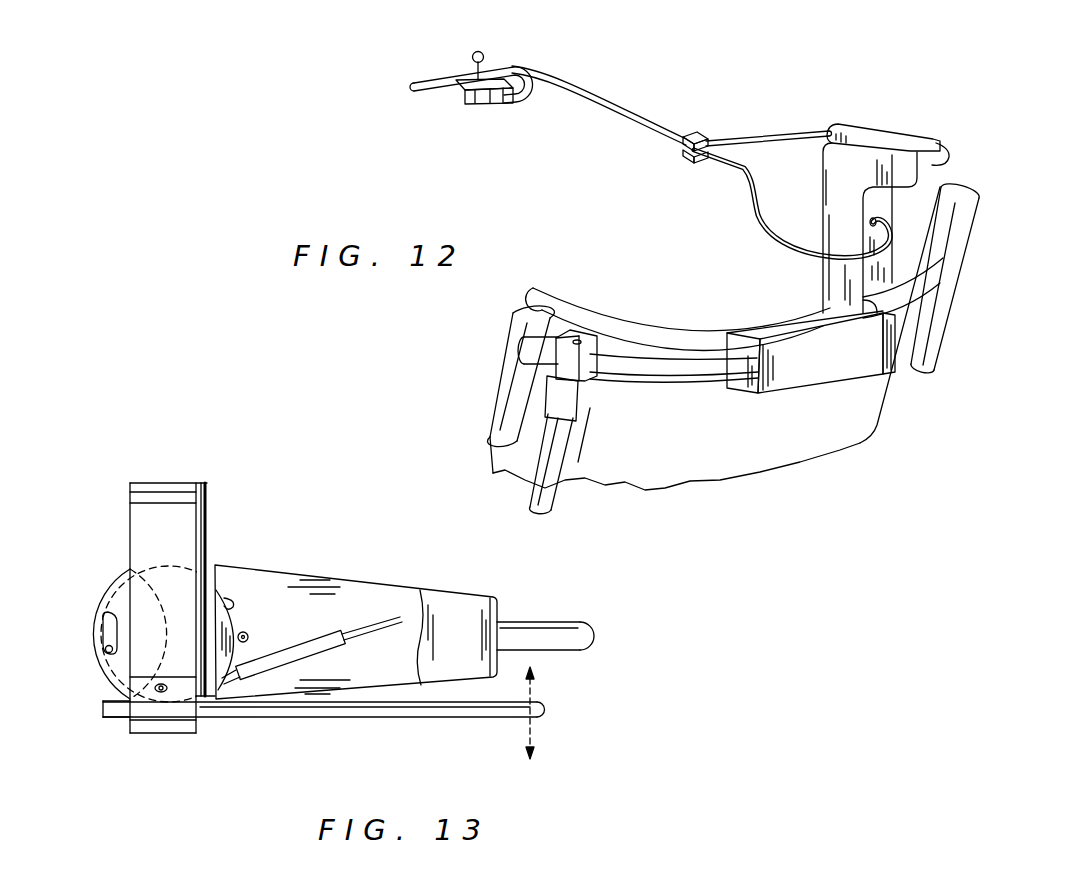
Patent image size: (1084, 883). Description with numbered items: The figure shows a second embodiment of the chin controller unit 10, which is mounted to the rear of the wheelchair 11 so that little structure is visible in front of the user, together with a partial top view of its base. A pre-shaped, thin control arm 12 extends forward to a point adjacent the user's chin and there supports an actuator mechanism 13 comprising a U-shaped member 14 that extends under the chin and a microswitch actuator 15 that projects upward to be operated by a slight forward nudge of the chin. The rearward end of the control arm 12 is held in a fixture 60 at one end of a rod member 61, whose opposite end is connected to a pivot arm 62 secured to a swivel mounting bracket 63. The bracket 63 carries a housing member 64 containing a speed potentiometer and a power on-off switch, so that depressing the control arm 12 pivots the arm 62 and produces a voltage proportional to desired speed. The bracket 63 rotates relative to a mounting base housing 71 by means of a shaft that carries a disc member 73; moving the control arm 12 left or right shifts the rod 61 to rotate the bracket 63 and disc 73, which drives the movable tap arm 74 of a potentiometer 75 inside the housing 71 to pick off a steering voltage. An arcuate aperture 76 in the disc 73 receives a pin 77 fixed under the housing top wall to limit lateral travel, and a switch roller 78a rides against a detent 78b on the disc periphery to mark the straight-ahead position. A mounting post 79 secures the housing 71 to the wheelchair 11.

In FIG. 12, the chin controller unit 10 is at (797, 81).
In FIG. 12, the wheelchair 11 is at (582, 311).
In FIG. 12, the control arm 12 is at (598, 93).
In FIG. 12, the actuator mechanism 13 is at (452, 116).
In FIG. 12, the U-shaped member 14 is at (532, 101).
In FIG. 13, the U-shaped member 14 is at (85, 473).
In FIG. 12, the microswitch actuator 15 is at (486, 56).
In FIG. 13, the microswitch actuator 15 is at (125, 783).
In FIG. 12, the fixture 60 is at (694, 135).
In FIG. 12, the rod member 61 is at (758, 139).
In FIG. 13, the rod member 61 is at (458, 718).
In FIG. 12, the pivot arm 62 is at (882, 133).
In FIG. 13, the pivot arm 62 is at (139, 513).
In FIG. 12, the swivel mounting bracket 63 is at (830, 177).
In FIG. 12, the housing member 64 is at (882, 212).
In FIG. 12, the mounting base housing 71 is at (818, 374).
In FIG. 13, the mounting base housing 71 is at (440, 600).
In FIG. 13, the disc member 73 is at (97, 636).
In FIG. 13, the movable tap arm 74 is at (228, 681).
In FIG. 13, the potentiometer 75 is at (323, 650).
In FIG. 13, the arcuate aperture 76 is at (108, 607).
In FIG. 13, the pin 77 is at (105, 651).
In FIG. 13, the switch roller 78a is at (300, 640).
In FIG. 13, the detent 78b is at (269, 606).
In FIG. 12, the mounting post 79 is at (702, 382).
In FIG. 13, the mounting post 79 is at (514, 626).